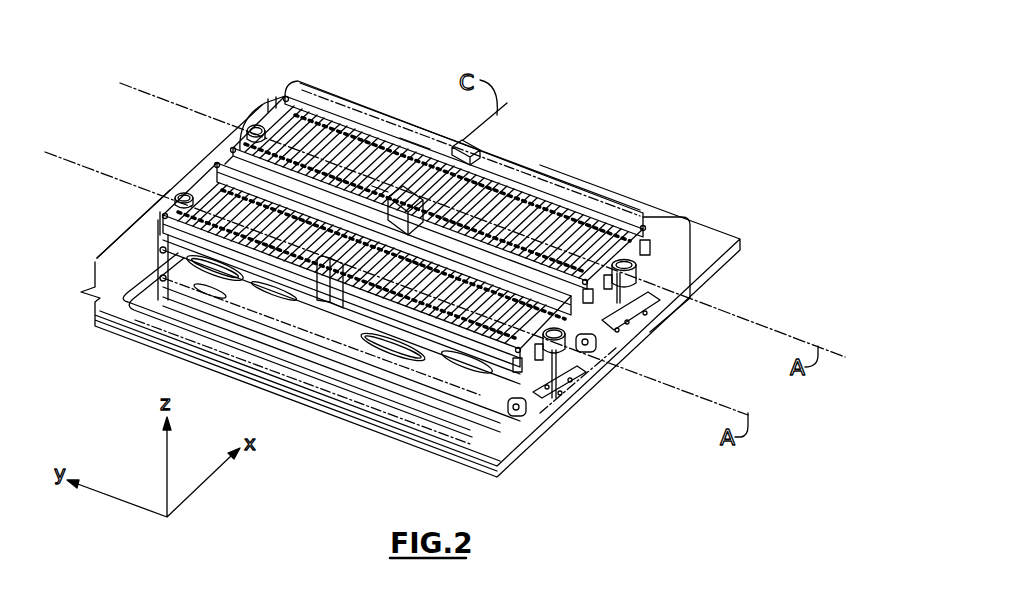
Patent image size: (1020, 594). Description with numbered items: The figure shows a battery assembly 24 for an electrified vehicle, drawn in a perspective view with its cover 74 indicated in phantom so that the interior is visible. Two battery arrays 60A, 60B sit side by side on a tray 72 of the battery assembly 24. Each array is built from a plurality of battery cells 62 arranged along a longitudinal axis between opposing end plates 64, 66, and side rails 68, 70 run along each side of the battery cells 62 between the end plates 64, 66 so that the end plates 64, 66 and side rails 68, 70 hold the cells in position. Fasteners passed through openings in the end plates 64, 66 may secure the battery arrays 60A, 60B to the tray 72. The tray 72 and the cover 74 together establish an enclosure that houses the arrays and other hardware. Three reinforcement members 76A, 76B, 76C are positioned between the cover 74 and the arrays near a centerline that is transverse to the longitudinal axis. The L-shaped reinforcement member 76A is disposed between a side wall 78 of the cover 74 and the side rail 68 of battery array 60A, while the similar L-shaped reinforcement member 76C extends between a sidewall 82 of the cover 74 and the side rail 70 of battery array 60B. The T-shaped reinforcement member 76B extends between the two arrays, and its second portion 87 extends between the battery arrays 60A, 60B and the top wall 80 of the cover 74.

The battery assembly 24 is at (503, 80).
The battery array 60A is at (607, 332).
The battery array 60B is at (658, 272).
The battery cells 62 is at (517, 197).
The end plate 64 is at (270, 97).
The end plate 66 is at (650, 227).
The side rail 68 is at (254, 125).
The side rail 70 is at (372, 128).
The tray 72 is at (470, 413).
The cover 74 is at (303, 88).
The reinforcement member 76A is at (320, 294).
The reinforcement member 76B is at (503, 198).
The reinforcement member 76C is at (480, 153).
The side wall 78 is at (160, 298).
The top wall 80 is at (167, 190).
The sidewall 82 is at (417, 135).
The second portion 87 is at (380, 192).